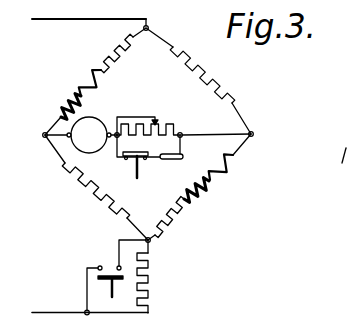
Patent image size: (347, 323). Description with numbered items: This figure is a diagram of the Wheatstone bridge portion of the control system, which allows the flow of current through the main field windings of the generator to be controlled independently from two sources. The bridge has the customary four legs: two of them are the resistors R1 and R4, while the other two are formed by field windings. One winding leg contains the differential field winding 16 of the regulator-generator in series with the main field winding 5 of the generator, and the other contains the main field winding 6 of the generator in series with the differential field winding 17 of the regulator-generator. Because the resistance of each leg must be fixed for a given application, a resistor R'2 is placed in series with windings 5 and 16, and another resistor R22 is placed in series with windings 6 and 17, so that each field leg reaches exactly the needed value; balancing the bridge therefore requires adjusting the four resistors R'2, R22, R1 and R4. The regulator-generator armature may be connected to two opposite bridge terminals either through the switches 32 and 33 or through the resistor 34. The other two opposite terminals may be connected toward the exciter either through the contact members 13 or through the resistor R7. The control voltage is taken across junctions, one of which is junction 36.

The main field winding 6 is at (90, 68).
The differential field winding 17 is at (66, 99).
The resistor R22 is at (116, 55).
The resistor R4 is at (215, 82).
The resistor 34 is at (160, 121).
The switch 33 is at (178, 155).
The switch 32 is at (124, 154).
The main field winding 5 is at (231, 172).
The differential field winding 16 is at (210, 189).
The resistor R1 is at (82, 190).
The resistor R'2 is at (189, 224).
The junction 36 is at (113, 277).
The resistor R7 is at (151, 289).
The contact members 13 is at (108, 275).